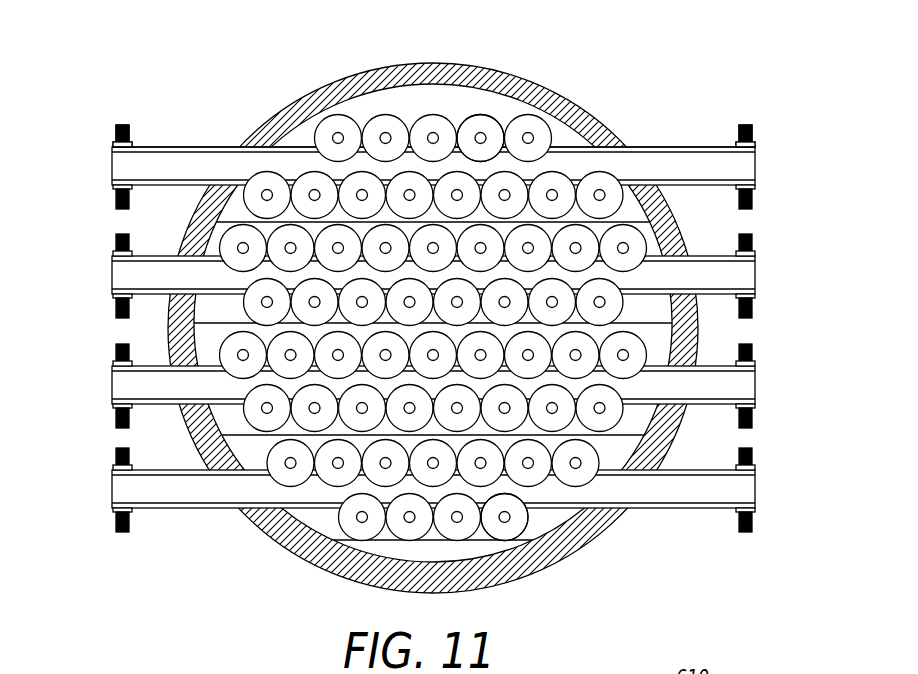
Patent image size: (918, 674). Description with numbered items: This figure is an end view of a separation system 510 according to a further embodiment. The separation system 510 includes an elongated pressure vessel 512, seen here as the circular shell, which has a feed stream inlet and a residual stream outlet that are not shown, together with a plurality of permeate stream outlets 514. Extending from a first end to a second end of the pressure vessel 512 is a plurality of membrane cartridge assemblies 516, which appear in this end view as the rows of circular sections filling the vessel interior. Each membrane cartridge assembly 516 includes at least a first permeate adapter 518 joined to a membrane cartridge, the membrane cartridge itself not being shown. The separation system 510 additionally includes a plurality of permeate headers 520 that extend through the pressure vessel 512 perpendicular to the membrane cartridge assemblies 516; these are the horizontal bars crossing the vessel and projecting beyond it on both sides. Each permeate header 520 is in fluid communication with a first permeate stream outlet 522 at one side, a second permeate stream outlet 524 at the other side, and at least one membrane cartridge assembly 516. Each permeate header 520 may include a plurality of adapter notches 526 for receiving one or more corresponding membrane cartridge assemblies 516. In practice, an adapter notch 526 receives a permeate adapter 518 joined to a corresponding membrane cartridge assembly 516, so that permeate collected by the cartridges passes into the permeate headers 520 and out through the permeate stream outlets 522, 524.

The separation system 510 is at (504, 61).
The elongated pressure vessel 512 is at (311, 95).
The permeate stream outlets 514 is at (112, 165).
The membrane cartridge assemblies 516 is at (494, 120).
The first permeate adapter 518 is at (386, 128).
The permeate headers 520 is at (680, 144).
The first permeate stream outlet 522 is at (120, 123).
The second permeate stream outlet 524 is at (747, 122).
The adapter notches 526 is at (647, 260).